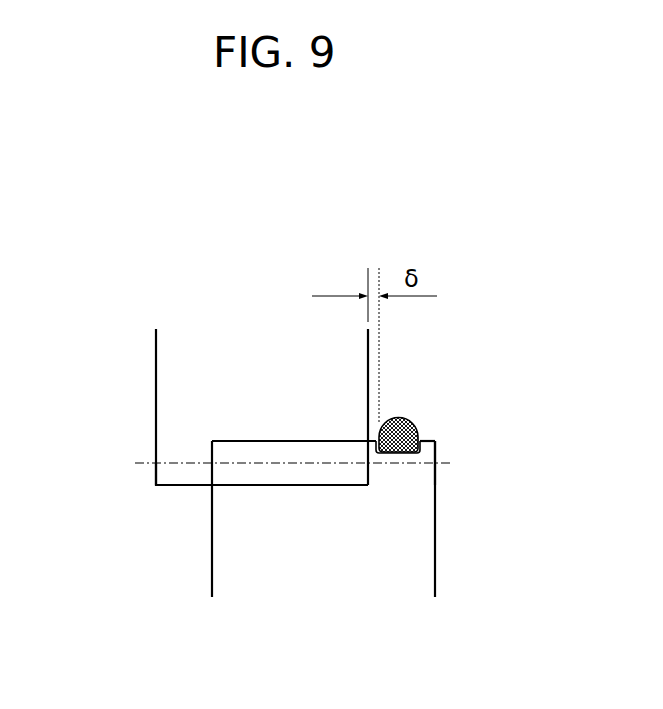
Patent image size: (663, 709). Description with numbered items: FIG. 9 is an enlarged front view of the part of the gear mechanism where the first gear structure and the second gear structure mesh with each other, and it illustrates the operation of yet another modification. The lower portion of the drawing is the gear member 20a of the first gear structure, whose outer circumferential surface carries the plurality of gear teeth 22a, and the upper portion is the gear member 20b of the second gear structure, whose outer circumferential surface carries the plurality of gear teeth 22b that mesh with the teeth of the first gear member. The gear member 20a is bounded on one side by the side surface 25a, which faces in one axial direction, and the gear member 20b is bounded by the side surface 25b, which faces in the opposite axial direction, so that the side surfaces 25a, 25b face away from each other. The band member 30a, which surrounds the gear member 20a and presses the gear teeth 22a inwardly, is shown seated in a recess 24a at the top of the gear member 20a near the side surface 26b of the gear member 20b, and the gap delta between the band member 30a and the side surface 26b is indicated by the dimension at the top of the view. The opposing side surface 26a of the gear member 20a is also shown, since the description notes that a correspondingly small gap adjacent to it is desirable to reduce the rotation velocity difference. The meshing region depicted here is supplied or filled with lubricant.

The gear member 20a is at (327, 569).
The gear member 20b is at (265, 356).
The gear teeth 22a is at (435, 474).
The gear teeth 22b is at (156, 474).
The seal groove 24a is at (402, 455).
The side surface 25a is at (435, 552).
The side surface 25b is at (156, 374).
The side surface 26a is at (212, 552).
The side surface 26b is at (368, 374).
The band member 30a is at (418, 428).